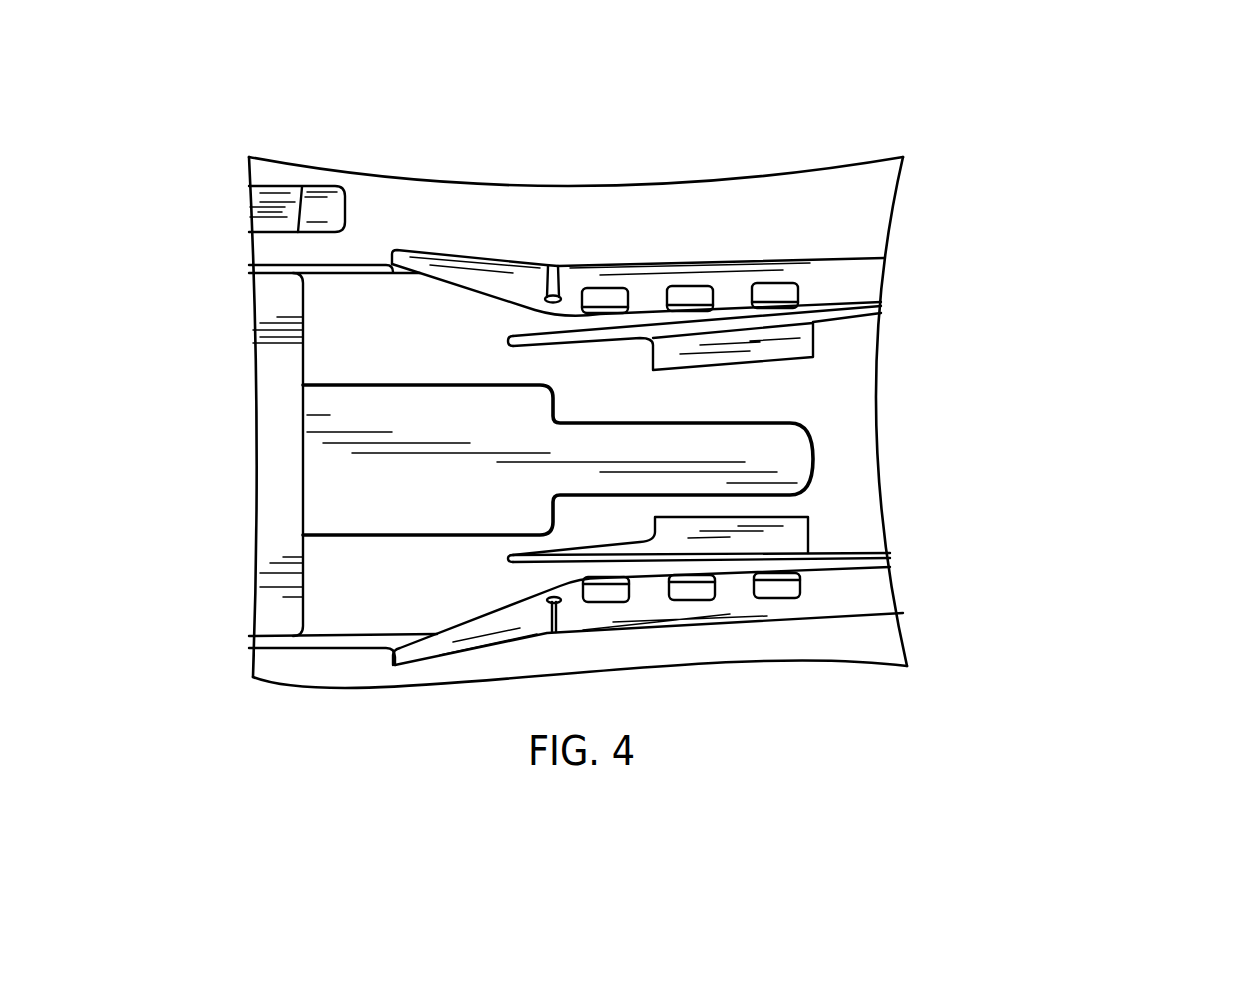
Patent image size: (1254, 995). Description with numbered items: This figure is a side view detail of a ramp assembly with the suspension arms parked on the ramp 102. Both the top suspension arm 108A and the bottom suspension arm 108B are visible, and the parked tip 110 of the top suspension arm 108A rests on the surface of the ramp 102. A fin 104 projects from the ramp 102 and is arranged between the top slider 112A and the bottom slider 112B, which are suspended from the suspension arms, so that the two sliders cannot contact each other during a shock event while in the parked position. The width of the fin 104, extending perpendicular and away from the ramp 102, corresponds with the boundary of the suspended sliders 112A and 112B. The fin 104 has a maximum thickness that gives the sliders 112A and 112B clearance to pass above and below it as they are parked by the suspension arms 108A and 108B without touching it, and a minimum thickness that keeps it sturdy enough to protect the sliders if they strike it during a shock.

The ramp 102 is at (273, 437).
The fin 104 is at (472, 402).
The top suspension arm 108A is at (785, 265).
The bottom suspension arm 108B is at (841, 594).
The parked tip 110 is at (360, 265).
The top slider 112A is at (717, 343).
The bottom slider 112B is at (780, 533).